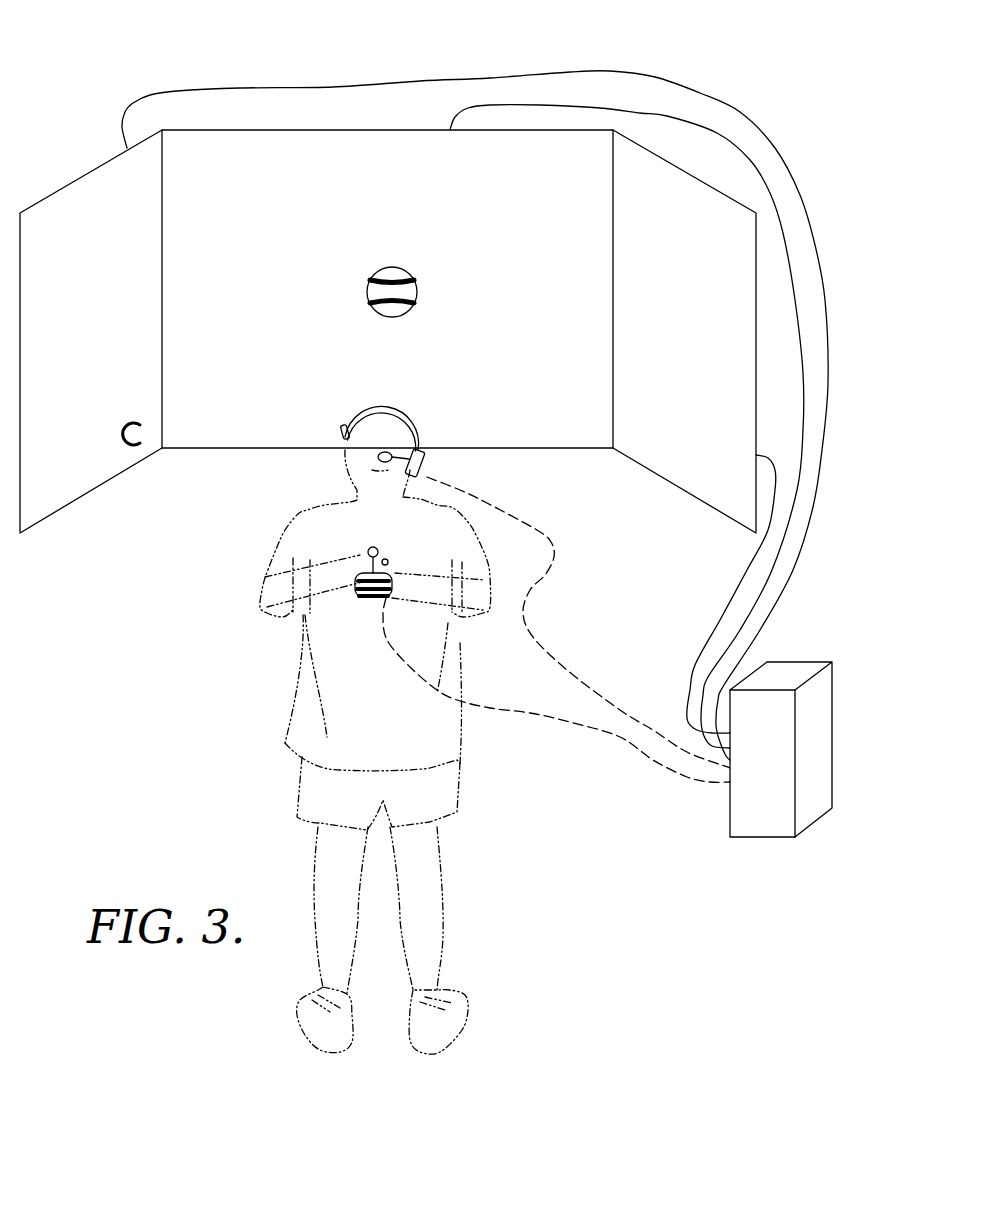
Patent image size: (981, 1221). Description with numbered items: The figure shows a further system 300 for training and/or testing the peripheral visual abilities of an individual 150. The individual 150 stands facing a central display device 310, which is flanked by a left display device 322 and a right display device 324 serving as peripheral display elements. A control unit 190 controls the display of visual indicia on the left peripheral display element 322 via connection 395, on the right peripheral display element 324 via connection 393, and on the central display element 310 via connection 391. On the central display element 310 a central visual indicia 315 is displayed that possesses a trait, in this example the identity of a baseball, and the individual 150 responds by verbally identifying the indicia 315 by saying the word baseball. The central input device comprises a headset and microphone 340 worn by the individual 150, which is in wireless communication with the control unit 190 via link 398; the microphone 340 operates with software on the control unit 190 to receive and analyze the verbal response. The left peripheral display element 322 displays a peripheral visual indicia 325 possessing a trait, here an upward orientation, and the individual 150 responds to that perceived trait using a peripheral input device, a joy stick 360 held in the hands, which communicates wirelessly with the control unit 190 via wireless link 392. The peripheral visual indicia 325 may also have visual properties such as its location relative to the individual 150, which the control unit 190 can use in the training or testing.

The system 300 is at (104, 56).
The central display device 310 is at (353, 128).
The left display device 322 is at (98, 167).
The right display device 324 is at (685, 170).
The central visual indicia 315 is at (390, 268).
The peripheral visual indicia 325 is at (131, 446).
The headset and microphone 340 is at (420, 462).
The joy stick 360 is at (357, 590).
The individual 150 is at (297, 678).
The connection 395 is at (333, 86).
The connection 391 is at (555, 107).
The connection 393 is at (687, 703).
The link 398 is at (570, 672).
The wireless link 392 is at (555, 718).
The control unit 190 is at (768, 838).